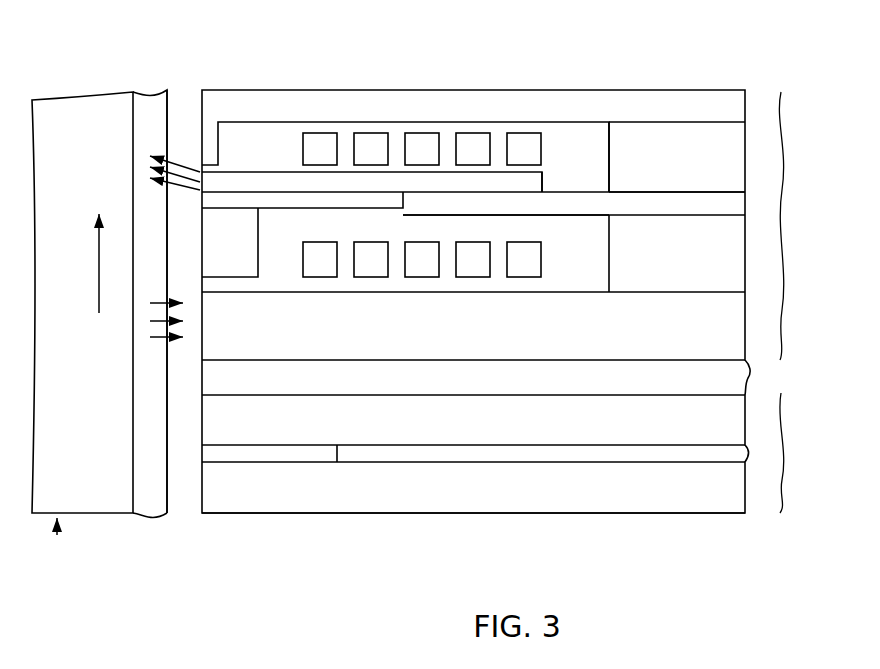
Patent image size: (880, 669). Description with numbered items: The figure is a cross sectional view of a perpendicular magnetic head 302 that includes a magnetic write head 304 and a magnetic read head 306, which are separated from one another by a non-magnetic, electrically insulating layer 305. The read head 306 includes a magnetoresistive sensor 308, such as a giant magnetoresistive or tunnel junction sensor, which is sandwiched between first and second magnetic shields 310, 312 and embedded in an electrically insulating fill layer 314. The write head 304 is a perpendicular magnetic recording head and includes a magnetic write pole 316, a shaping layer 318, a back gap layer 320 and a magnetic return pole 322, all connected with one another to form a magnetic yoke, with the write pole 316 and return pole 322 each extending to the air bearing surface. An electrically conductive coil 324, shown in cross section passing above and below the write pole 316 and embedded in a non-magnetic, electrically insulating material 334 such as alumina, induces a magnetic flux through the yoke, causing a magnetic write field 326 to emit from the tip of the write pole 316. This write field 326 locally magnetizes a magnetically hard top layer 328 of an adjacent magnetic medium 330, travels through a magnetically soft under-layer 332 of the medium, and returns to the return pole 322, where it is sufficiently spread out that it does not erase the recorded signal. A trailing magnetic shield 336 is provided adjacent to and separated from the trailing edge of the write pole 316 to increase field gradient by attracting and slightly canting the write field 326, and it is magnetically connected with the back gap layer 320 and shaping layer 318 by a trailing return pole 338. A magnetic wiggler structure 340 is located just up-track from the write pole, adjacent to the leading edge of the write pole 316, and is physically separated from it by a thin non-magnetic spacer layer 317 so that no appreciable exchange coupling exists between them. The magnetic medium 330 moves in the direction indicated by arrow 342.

The magnetic head 302 is at (430, 86).
The magnetic write head 304 is at (786, 176).
The non-magnetic, electrically insulating layer 305 is at (473, 380).
The magnetic read head 306 is at (787, 403).
The magnetoresistive sensor 308 is at (263, 450).
The first magnetic shield 310 is at (471, 487).
The second magnetic shield 312 is at (385, 424).
The electrically insulating fill layer 314 is at (503, 458).
The magnetic write pole 316 is at (228, 182).
The non-magnetic spacer layer 317 is at (263, 200).
The shaping layer 318 is at (522, 210).
The back gap layer 320 is at (698, 250).
The magnetic return pole 322 is at (498, 340).
The electrically conductive coil 324 is at (515, 300).
The magnetic write field 326 is at (172, 178).
The magnetically hard top layer 328 is at (152, 94).
The magnetic medium 330 is at (57, 535).
The magnetically soft under-layer 332 is at (68, 108).
The non-magnetic, electrically insulating material 334 is at (554, 155).
The trailing magnetic shield 336 is at (207, 140).
The trailing return pole 338 is at (698, 138).
The magnetic wiggler structure 340 is at (235, 269).
The arrow 342 is at (98, 246).